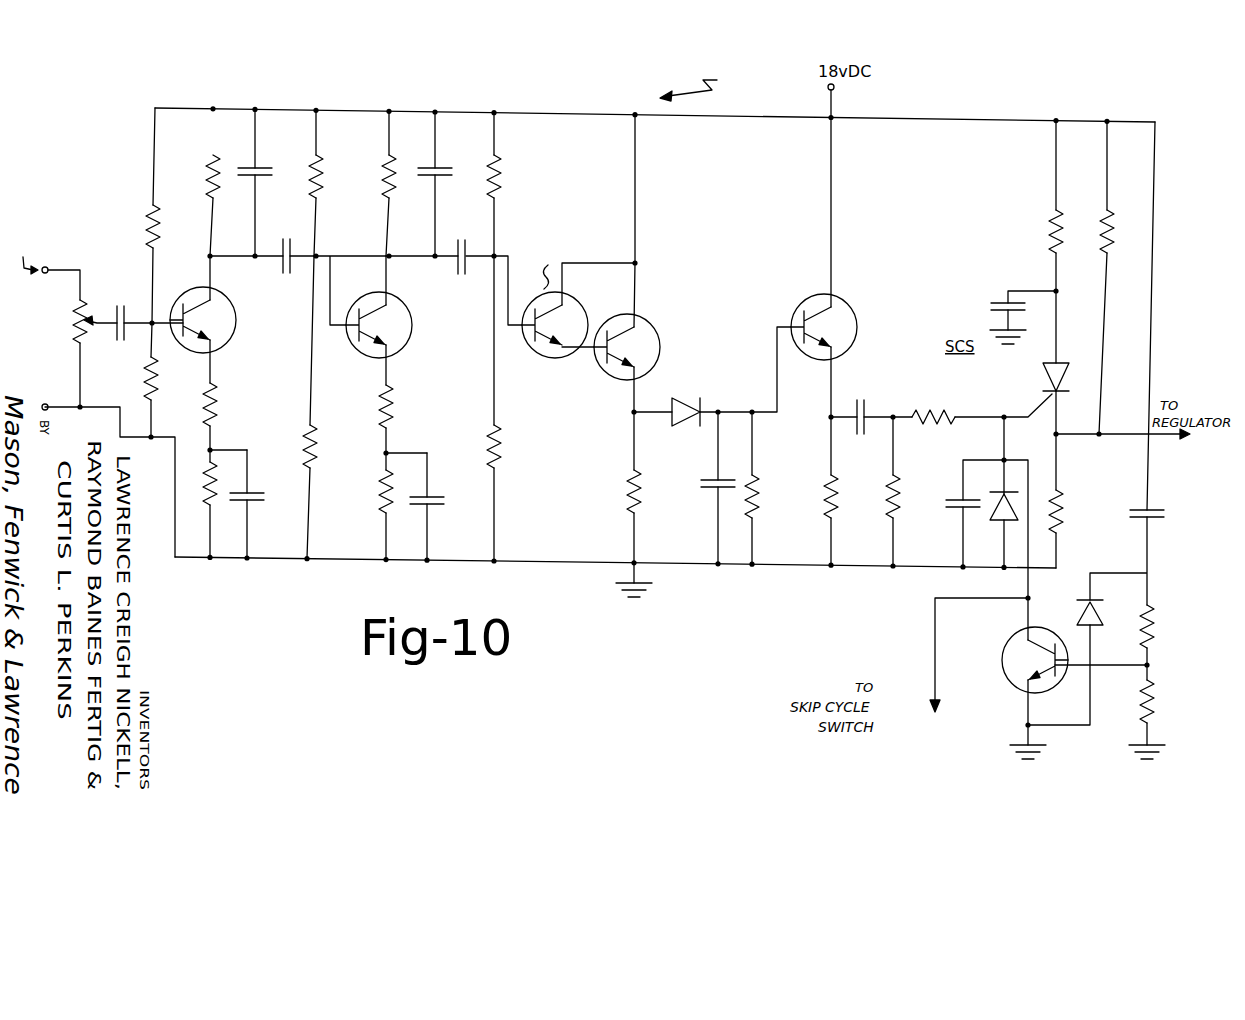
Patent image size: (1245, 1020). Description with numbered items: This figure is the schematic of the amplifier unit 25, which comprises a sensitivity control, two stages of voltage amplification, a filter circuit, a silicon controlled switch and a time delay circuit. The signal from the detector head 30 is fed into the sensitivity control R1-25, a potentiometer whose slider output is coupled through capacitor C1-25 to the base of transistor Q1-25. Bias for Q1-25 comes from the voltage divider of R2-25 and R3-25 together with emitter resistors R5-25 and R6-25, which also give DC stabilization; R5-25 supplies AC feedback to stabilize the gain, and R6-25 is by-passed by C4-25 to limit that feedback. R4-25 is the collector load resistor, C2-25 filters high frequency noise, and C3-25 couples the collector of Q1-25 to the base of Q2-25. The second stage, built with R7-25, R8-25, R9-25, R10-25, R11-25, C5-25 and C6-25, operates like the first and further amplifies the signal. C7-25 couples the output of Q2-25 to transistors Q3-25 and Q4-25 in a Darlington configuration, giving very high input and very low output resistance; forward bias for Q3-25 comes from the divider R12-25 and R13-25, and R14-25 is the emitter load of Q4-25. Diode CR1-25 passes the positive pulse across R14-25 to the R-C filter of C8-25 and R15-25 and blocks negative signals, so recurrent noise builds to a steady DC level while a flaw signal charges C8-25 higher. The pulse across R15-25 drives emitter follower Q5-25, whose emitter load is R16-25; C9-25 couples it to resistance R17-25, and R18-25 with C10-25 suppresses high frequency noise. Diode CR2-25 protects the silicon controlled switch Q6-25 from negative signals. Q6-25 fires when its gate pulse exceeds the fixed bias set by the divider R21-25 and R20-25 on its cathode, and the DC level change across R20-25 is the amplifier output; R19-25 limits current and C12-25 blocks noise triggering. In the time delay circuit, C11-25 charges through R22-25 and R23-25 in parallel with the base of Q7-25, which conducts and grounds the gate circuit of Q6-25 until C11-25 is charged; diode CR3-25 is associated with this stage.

The amplifier unit 25 is at (692, 80).
The detector head 30 is at (60, 317).
The sensitivity control R1-25 is at (71, 352).
The coupling capacitor C1-25 is at (120, 318).
The voltage divider resistor R2-25 is at (149, 223).
The voltage divider resistor R3-25 is at (174, 378).
The collector load resistor R4-25 is at (190, 201).
The emitter resistor R5-25 is at (235, 422).
The emitter resistor R6-25 is at (225, 506).
The filter capacitor C2-25 is at (271, 182).
The coupling capacitor C3-25 is at (285, 251).
The by-pass capacitor C4-25 is at (266, 504).
The transistor Q1-25 is at (231, 319).
The resistor R7-25 is at (340, 183).
The resistor R8-25 is at (334, 407).
The resistor R9-25 is at (381, 183).
The resistor R10-25 is at (416, 427).
The resistor R11-25 is at (360, 515).
The capacitor C5-25 is at (451, 184).
The capacitor C6-25 is at (446, 506).
The coupling capacitor C7-25 is at (466, 255).
The transistor Q2-25 is at (407, 320).
The voltage divider resistor R12-25 is at (526, 269).
The voltage divider resistor R13-25 is at (522, 491).
The transistor Q3-25 is at (556, 317).
The transistor Q4-25 is at (648, 338).
The diode CR1-25 is at (714, 399).
The emitter load resistor R14-25 is at (600, 515).
The filter capacitor C8-25 is at (697, 488).
The filter resistor R15-25 is at (780, 488).
The emitter follower transistor Q5-25 is at (843, 319).
The coupling capacitor C9-25 is at (866, 408).
The emitter load resistor R16-25 is at (860, 516).
The resistance R17-25 is at (921, 491).
The resistor R18-25 is at (942, 416).
The capacitor C10-25 is at (947, 501).
The diode CR2-25 is at (1012, 487).
The silicon controlled switch Q6-25 is at (1018, 375).
The current limiting resistor R19-25 is at (1024, 187).
The capacitor C12-25 is at (990, 290).
The voltage divider resistor R20-25 is at (1083, 509).
The voltage divider resistor R21-25 is at (1127, 225).
The time delay capacitor C11-25 is at (1167, 510).
The diode CR3-25 is at (1109, 612).
The charging resistor R22-25 is at (1176, 640).
The charging resistor R23-25 is at (1176, 698).
The time delay transistor Q7-25 is at (1007, 667).